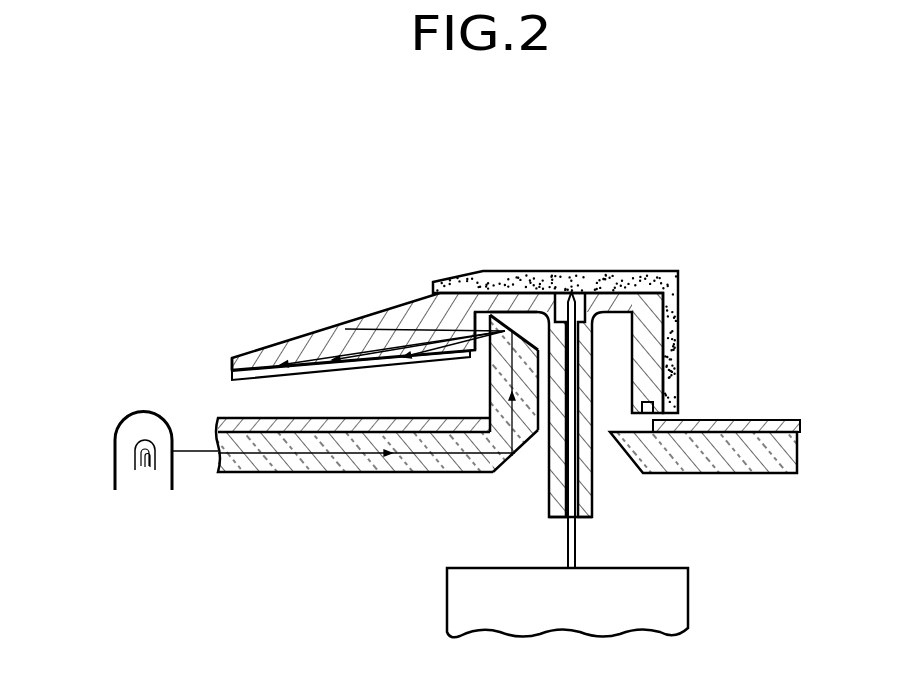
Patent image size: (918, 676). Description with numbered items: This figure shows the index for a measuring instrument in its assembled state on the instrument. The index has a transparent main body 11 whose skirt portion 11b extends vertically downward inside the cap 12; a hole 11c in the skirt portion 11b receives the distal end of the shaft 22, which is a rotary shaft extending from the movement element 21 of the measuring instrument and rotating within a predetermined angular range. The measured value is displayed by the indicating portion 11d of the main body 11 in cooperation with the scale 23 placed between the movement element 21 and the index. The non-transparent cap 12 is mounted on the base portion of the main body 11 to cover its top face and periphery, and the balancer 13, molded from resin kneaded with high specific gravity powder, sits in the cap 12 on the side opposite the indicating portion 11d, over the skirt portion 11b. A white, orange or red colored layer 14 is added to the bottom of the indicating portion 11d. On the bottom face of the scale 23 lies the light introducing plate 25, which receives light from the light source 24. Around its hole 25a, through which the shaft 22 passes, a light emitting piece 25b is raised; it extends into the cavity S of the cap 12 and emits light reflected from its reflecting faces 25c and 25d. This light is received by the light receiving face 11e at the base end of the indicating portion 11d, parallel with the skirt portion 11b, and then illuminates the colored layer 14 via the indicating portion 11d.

The main body 11 is at (367, 311).
The skirt portion 11b is at (547, 465).
The hole 11c is at (570, 497).
The indicating portion 11d is at (278, 358).
The light receiving face 11e is at (478, 311).
The cap 12 is at (680, 281).
The balancer 13 is at (653, 352).
The colored layer 14 is at (270, 378).
The movement element 21 is at (688, 600).
The shaft 22 is at (577, 543).
The scale 23 is at (748, 414).
The light source 24 is at (114, 456).
The light introducing plate 25 is at (252, 474).
The hole 25a is at (620, 442).
The light emitting piece 25b is at (490, 387).
The reflecting face 25c is at (510, 468).
The reflecting face 25d is at (525, 340).
The cavity S is at (516, 316).